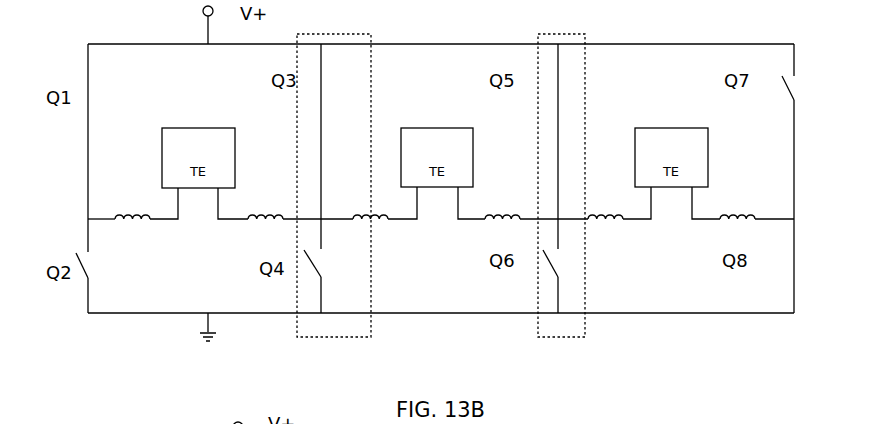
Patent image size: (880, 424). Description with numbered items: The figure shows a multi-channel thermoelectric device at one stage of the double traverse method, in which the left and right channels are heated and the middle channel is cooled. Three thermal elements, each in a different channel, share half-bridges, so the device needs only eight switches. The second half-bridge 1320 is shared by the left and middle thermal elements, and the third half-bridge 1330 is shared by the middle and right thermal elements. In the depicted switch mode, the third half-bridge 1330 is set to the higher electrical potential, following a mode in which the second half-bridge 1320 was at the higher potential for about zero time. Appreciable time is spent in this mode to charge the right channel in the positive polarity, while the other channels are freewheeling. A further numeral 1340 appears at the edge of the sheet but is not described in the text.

The second half-bridge 1320 is at (335, 338).
The third half-bridge 1330 is at (562, 340).
The switching stage (next figure) 1340 is at (804, 423).